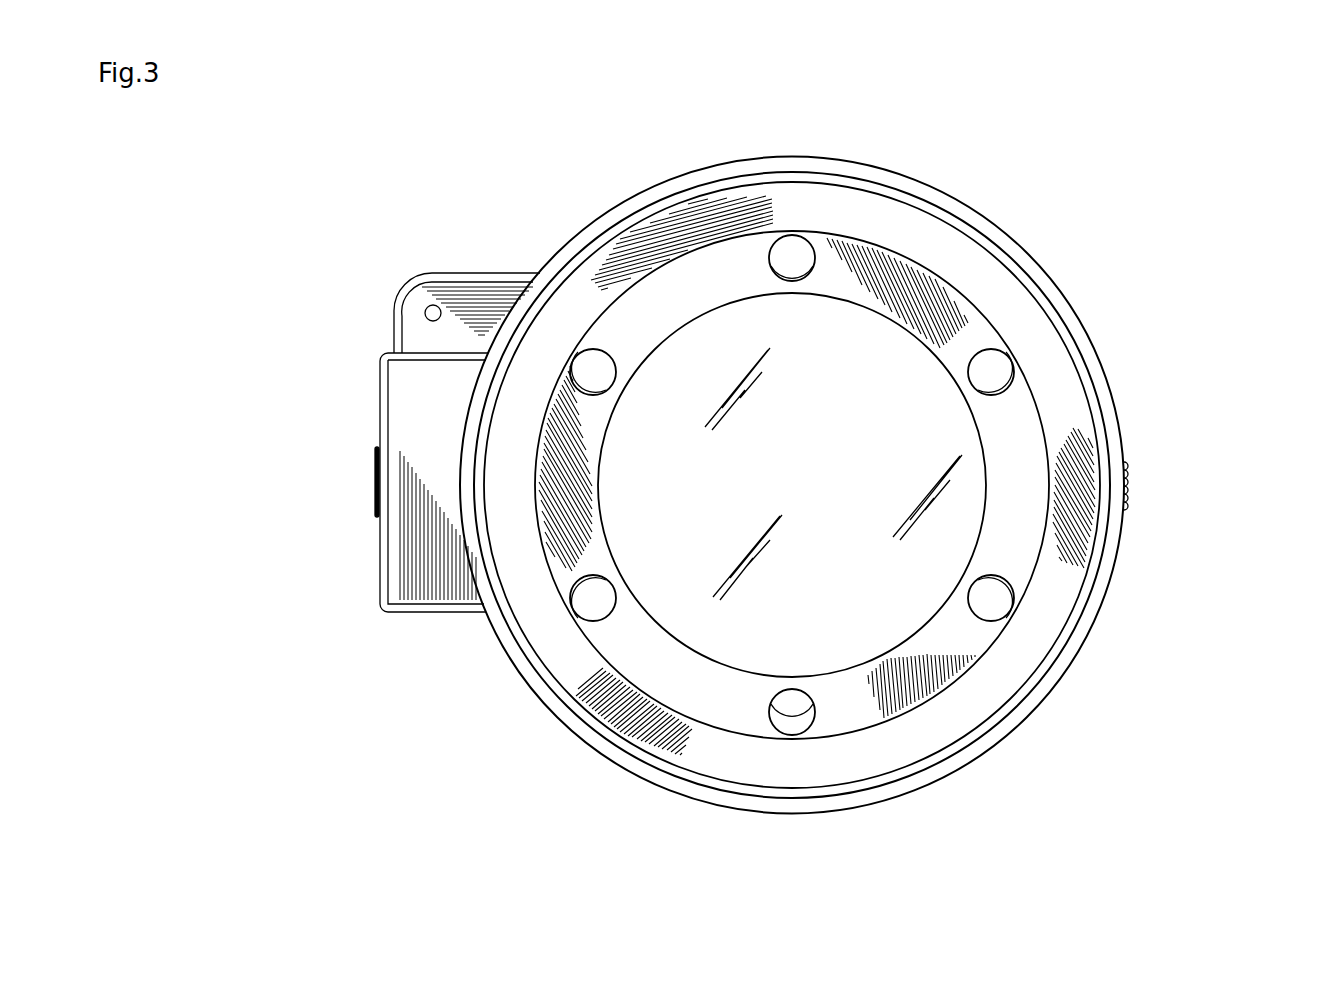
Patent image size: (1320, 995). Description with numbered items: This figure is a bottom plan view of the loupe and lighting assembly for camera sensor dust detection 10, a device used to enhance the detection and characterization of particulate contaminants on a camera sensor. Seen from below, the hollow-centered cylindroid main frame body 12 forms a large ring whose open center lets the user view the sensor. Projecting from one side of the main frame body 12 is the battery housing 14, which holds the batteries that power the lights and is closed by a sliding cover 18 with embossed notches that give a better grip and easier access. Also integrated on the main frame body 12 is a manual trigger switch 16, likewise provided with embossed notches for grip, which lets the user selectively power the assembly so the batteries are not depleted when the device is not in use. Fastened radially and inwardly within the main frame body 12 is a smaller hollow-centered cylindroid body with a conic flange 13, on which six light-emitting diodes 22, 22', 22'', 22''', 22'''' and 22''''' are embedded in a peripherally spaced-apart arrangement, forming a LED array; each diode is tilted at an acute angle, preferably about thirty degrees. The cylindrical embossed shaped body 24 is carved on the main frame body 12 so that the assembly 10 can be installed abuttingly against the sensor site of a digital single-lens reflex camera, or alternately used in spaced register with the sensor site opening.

The loupe and lighting assembly for camera sensor dust detection 10 is at (1004, 197).
The hollow-centered cylindroid main frame body 12 is at (751, 165).
The conic flange 13 is at (747, 706).
The battery housing 14 is at (430, 573).
The manual trigger switch 16 is at (1130, 490).
The sliding cover 18 is at (375, 481).
The light-emitting diode 22 is at (492, 638).
The light-emitting diode 22' is at (821, 780).
The light-emitting diode 22'' is at (1047, 698).
The light-emitting diode 22''' is at (1110, 346).
The light-emitting diode 22'''' is at (866, 178).
The light-emitting diode 22''''' is at (514, 272).
The cylindrical embossed shaped body 24 is at (1010, 653).